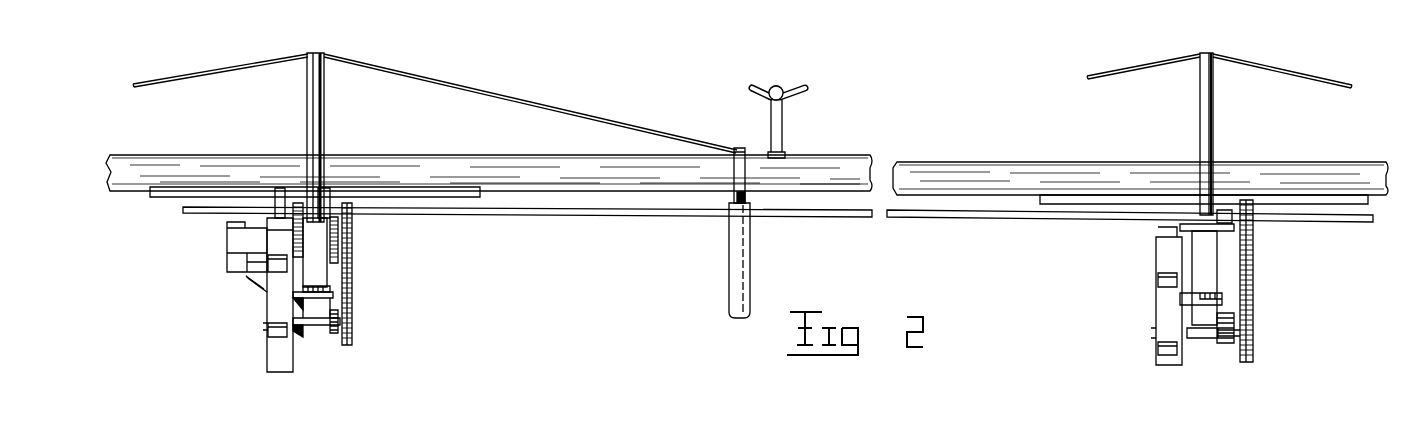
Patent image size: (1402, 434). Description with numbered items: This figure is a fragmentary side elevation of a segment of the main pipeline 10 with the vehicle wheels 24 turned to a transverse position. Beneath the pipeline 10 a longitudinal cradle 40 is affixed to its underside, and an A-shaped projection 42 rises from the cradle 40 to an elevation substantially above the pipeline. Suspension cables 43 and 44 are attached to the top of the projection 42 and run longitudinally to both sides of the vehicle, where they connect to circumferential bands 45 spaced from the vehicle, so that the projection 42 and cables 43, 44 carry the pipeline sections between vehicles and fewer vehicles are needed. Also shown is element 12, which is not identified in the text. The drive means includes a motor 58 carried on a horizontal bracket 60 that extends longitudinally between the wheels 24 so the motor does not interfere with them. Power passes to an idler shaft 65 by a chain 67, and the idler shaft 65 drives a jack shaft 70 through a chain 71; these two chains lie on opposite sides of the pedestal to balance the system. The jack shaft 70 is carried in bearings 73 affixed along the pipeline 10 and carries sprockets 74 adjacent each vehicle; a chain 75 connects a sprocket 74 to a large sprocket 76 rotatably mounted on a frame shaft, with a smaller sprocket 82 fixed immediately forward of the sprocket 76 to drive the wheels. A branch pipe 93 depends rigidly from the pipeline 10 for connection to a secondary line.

The pipeline 10 is at (993, 165).
The hand crank 12 is at (783, 116).
The wheel 24 is at (285, 358).
The longitudinal cradle 40 is at (480, 190).
The A-shaped projection 42 is at (324, 105).
The suspension cable 43 is at (223, 76).
The suspension cable 44 is at (391, 72).
The circumferential band 45 is at (737, 150).
The motor 58 is at (227, 253).
The horizontal bracket 60 is at (247, 277).
The idler shaft 65 is at (352, 248).
The chain 67 is at (345, 238).
The jack shaft 70 is at (458, 210).
The chain 71 is at (290, 234).
The bearing 73 is at (322, 192).
The sprocket 74 is at (1265, 232).
The chain 75 is at (354, 296).
The large sprocket 76 is at (1255, 336).
The smaller sprocket 82 is at (334, 338).
The branch pipe 93 is at (748, 280).